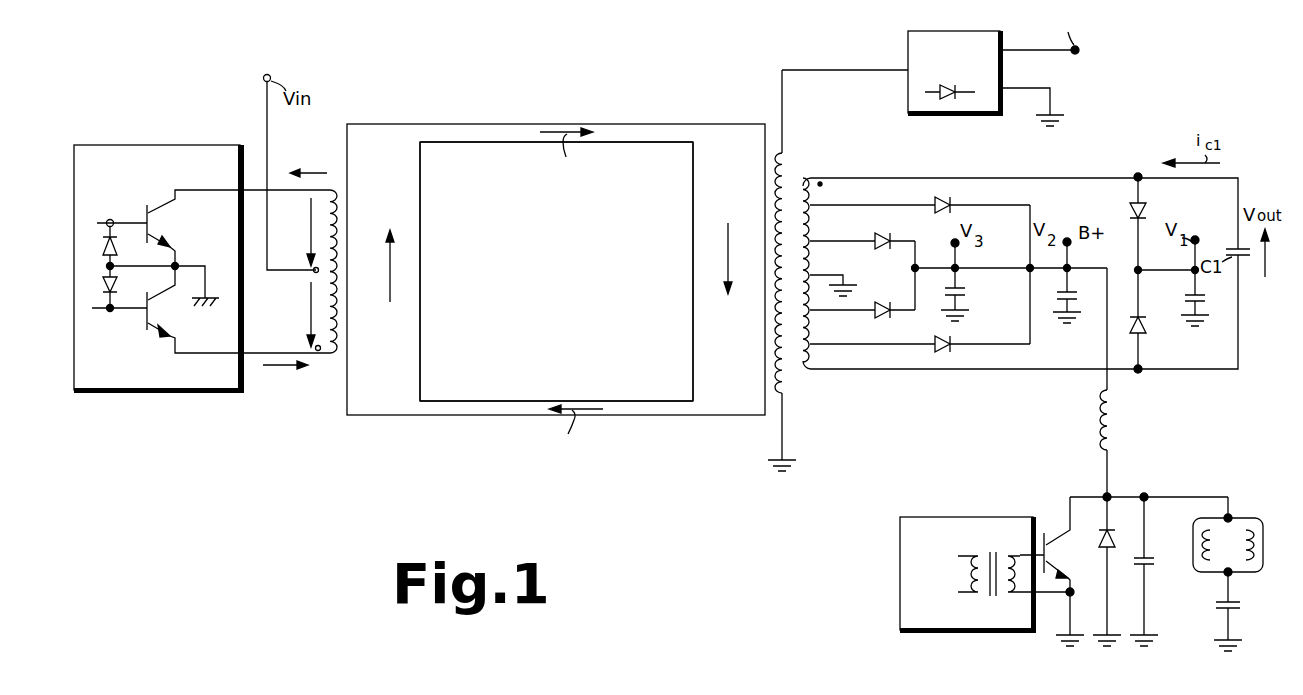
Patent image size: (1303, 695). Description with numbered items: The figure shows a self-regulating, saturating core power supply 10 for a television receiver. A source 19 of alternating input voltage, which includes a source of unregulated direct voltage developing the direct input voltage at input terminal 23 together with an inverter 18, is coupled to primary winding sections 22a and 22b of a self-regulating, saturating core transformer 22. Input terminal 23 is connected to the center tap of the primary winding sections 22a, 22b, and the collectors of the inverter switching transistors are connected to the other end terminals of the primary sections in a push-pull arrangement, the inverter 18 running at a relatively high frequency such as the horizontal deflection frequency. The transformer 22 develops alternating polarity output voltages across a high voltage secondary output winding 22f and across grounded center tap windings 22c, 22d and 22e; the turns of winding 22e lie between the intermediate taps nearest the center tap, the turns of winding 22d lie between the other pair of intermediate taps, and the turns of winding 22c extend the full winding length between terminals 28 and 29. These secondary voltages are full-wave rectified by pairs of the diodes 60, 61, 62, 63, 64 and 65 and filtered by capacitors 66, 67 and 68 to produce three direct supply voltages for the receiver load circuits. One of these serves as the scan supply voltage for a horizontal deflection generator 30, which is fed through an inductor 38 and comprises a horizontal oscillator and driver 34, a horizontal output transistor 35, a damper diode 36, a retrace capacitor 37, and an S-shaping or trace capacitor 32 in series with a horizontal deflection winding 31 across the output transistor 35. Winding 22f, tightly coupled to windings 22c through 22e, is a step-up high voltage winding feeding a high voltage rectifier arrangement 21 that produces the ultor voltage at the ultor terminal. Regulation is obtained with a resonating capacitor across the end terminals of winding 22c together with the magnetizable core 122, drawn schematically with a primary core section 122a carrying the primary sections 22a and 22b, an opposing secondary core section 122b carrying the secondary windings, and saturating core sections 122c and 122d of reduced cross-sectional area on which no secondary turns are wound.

The self-regulating power supply 10 is at (742, 33).
The inverter 18 is at (189, 391).
The source of alternating input voltage 19 is at (160, 129).
The high voltage rectifier arrangement 21 is at (974, 116).
The self-regulating saturating core transformer 22 is at (562, 108).
The primary winding section 22a is at (334, 357).
The primary winding section 22b is at (332, 189).
The secondary winding 22c is at (814, 188).
The secondary winding 22d is at (814, 224).
The secondary winding 22e is at (812, 260).
The high voltage secondary output winding 22f is at (785, 164).
The input terminal 23 is at (263, 82).
The terminal 28 is at (1136, 175).
The terminal 29 is at (1140, 371).
The horizontal deflection generator 30 is at (976, 494).
The horizontal deflection winding 31 is at (1262, 546).
The S-shaping or trace capacitor 32 is at (1241, 606).
The horizontal oscillator and driver 34 is at (970, 633).
The horizontal output transistor 35 is at (1052, 571).
The damper diode 36 is at (1125, 532).
The retrace capacitor 37 is at (1162, 556).
The inductor 38 is at (1098, 438).
The diode 60 is at (1144, 211).
The diode 61 is at (1144, 333).
The diode 62 is at (944, 198).
The diode 63 is at (948, 346).
The diode 64 is at (879, 234).
The diode 65 is at (883, 318).
The capacitor 66 is at (1207, 305).
The capacitor 67 is at (1080, 300).
The capacitor 68 is at (967, 294).
The magnetizable core 122 is at (577, 279).
The primary core section 122a is at (420, 318).
The secondary core section 122b is at (693, 316).
The saturating core section 122c is at (500, 142).
The saturating core section 122d is at (614, 401).